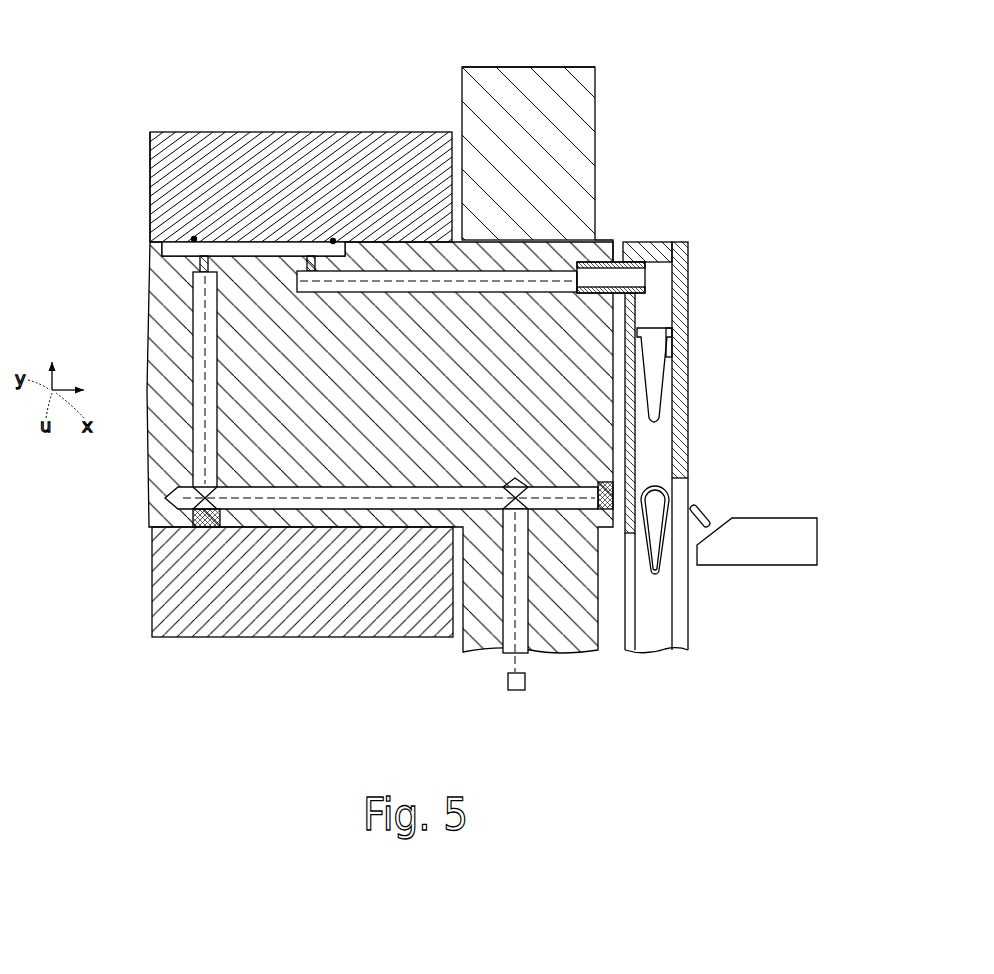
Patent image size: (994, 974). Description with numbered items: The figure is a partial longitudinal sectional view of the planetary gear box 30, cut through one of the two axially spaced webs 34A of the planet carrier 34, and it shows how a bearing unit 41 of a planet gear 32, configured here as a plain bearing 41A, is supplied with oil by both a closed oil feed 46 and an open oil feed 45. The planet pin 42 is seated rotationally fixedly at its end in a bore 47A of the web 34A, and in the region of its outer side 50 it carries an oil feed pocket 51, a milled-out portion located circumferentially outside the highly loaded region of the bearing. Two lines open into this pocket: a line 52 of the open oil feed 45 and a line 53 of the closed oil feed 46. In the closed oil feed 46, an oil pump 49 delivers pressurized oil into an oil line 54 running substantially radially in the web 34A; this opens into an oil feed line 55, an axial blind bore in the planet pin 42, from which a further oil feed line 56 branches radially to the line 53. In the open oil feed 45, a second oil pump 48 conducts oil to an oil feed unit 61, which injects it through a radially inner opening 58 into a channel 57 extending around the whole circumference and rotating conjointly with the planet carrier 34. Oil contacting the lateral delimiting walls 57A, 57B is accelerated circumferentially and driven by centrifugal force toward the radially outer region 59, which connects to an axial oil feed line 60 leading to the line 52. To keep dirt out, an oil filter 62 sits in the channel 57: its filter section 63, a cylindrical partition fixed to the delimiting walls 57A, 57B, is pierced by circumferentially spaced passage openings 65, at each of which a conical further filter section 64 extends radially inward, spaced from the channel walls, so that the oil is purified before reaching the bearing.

The planetary gear box 30 is at (130, 67).
The planet gear 32 is at (194, 236).
The planet carrier 34 is at (606, 104).
The web 34A is at (526, 80).
The bearing unit 41 is at (143, 243).
The plain bearing 41A is at (187, 228).
The planet pin 42 is at (166, 350).
The open oil feed 45 is at (703, 300).
The closed oil feed 46 is at (490, 587).
The bore 47A is at (612, 232).
The oil pump 48 is at (817, 515).
The oil pump 49 is at (540, 687).
The outer side 50 is at (455, 274).
The oil feed pocket 51 is at (333, 238).
The line 52 is at (304, 248).
The line 53 is at (196, 243).
The oil line 54 is at (511, 648).
The oil feed line 55 is at (289, 503).
The further oil feed line 56 is at (194, 335).
The channel 57 is at (689, 452).
The lateral delimiting wall 57A is at (655, 460).
The lateral delimiting wall 57B is at (662, 400).
The opening 58 is at (684, 515).
The radially outer region 59 is at (652, 276).
The oil feed line 60 is at (556, 281).
The oil feed unit 61 is at (714, 509).
The oil filter 62 is at (687, 353).
The filter section 63 is at (686, 330).
The further filter section 64 is at (686, 428).
The passage opening 65 is at (659, 323).